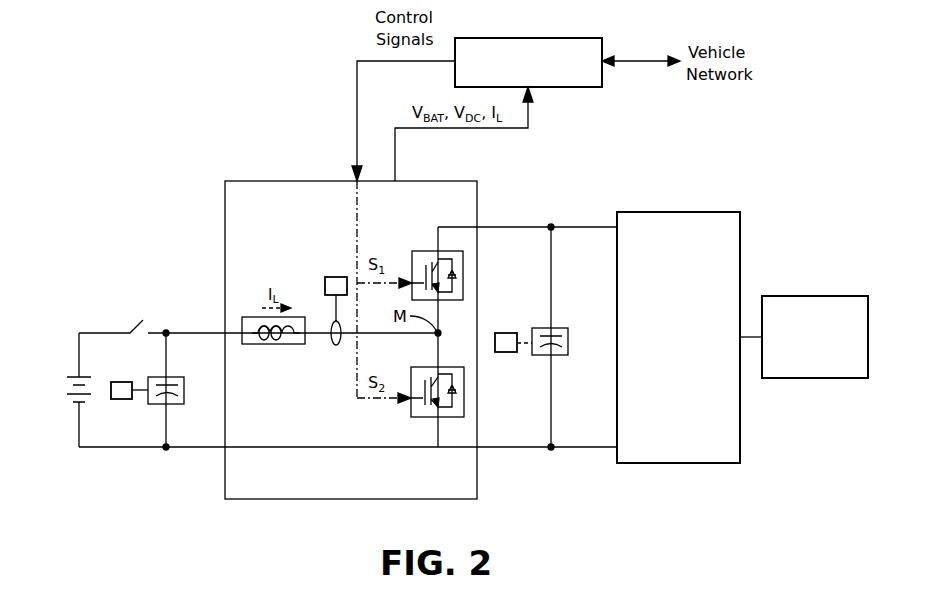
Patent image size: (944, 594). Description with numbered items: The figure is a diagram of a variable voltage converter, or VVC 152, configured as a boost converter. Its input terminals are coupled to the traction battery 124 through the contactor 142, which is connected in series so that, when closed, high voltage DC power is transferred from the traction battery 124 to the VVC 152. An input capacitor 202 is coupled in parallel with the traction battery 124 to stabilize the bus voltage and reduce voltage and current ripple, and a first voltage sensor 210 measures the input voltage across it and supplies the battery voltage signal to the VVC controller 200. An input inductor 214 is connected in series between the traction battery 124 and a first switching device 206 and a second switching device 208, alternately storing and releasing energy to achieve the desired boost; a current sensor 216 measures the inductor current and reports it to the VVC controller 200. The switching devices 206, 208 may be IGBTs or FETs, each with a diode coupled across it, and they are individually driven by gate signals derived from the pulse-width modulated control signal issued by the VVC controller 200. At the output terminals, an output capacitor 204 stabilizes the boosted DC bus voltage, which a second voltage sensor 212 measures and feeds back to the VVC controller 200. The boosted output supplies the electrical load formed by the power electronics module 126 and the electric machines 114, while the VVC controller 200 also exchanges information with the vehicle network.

The VVC controller 200 is at (528, 38).
The variable voltage converter (VVC) 152 is at (352, 499).
The first switching device 206 is at (425, 251).
The second switching device 208 is at (424, 367).
The input inductor 214 is at (272, 344).
The current sensor 216 is at (336, 277).
The output capacitor 204 is at (558, 328).
The second voltage sensor 212 is at (506, 333).
The power electronics module 126 is at (662, 212).
The electric machines 114 is at (797, 296).
The traction battery 124 is at (72, 389).
The contactor 142 is at (139, 322).
The input capacitor 202 is at (172, 377).
The first voltage sensor 210 is at (128, 382).